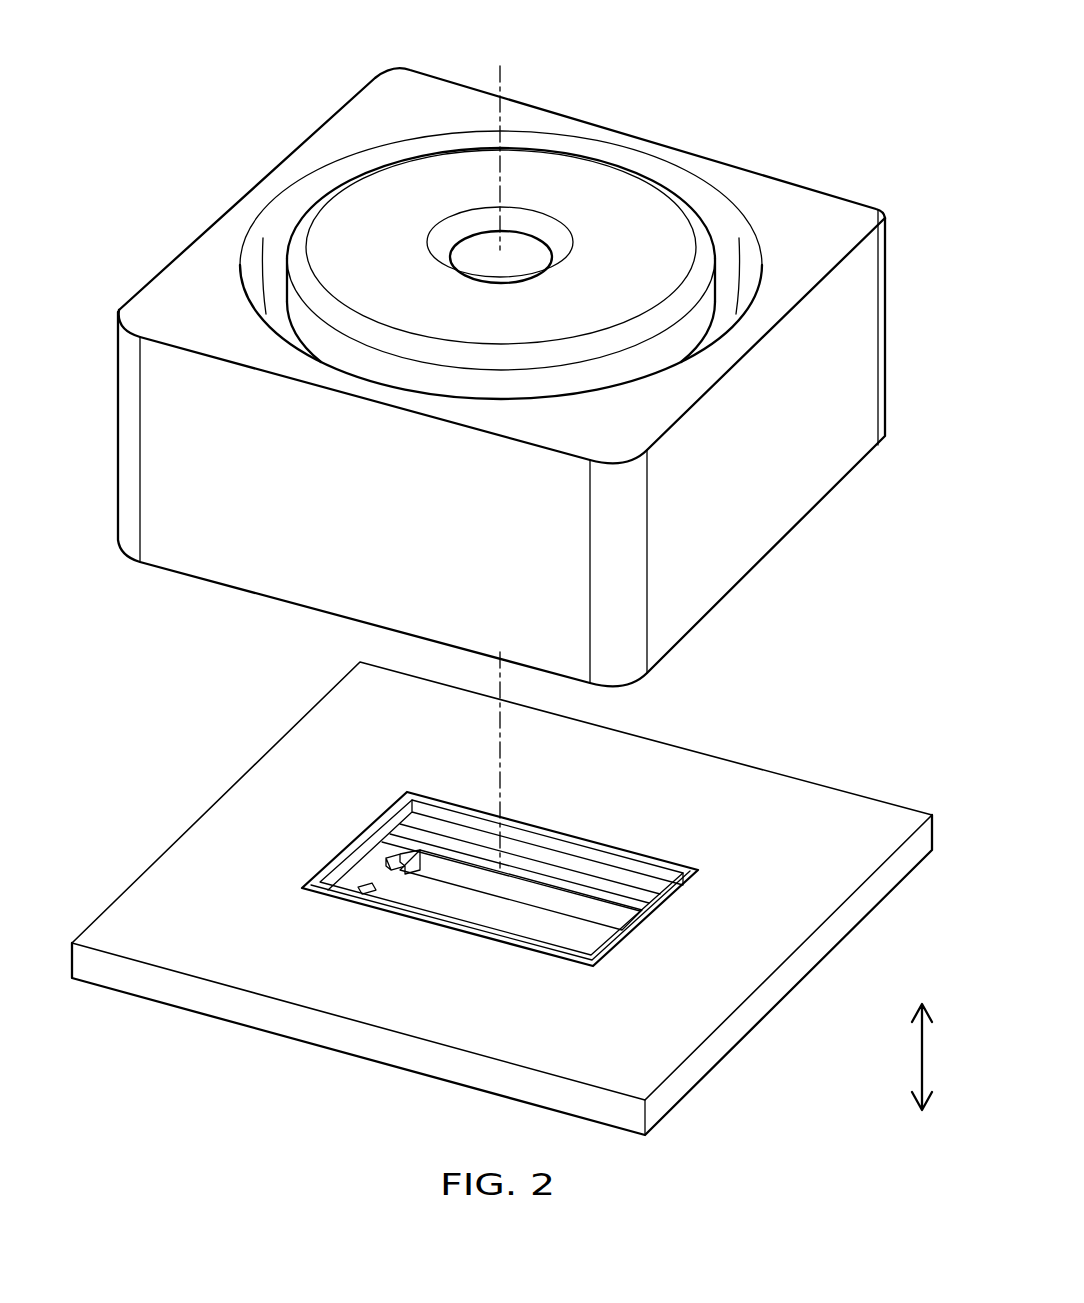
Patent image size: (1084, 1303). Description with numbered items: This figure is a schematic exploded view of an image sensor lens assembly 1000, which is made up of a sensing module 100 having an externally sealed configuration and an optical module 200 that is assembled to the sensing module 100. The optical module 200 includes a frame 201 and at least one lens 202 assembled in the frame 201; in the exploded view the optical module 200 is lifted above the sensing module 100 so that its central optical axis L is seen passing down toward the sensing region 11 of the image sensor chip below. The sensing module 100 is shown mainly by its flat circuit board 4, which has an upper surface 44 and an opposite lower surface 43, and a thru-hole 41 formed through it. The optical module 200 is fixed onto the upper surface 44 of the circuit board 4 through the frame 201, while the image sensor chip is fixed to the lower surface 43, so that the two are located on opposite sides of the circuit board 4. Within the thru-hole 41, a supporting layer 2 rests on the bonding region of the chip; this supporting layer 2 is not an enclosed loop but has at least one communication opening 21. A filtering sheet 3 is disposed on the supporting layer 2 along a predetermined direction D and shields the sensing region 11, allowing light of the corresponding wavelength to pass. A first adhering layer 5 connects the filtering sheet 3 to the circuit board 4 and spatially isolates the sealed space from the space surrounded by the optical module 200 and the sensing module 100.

The image sensor lens assembly 1000 is at (825, 600).
The optical module 200 is at (738, 590).
The frame 201 is at (358, 118).
The lens 202 is at (670, 222).
The sensing module 100 is at (740, 752).
The circuit board 4 is at (262, 760).
The upper surface 44 is at (146, 914).
The lower surface 43 is at (139, 1006).
The thru-hole 41 is at (519, 955).
The first adhering layer 5 is at (417, 920).
The sensing region 11 is at (450, 900).
The filtering sheet 3 is at (626, 852).
The supporting layer 2 is at (560, 875).
The communication opening 21 is at (376, 878).
The central optical axis L is at (500, 75).
The predetermined direction D is at (908, 1057).